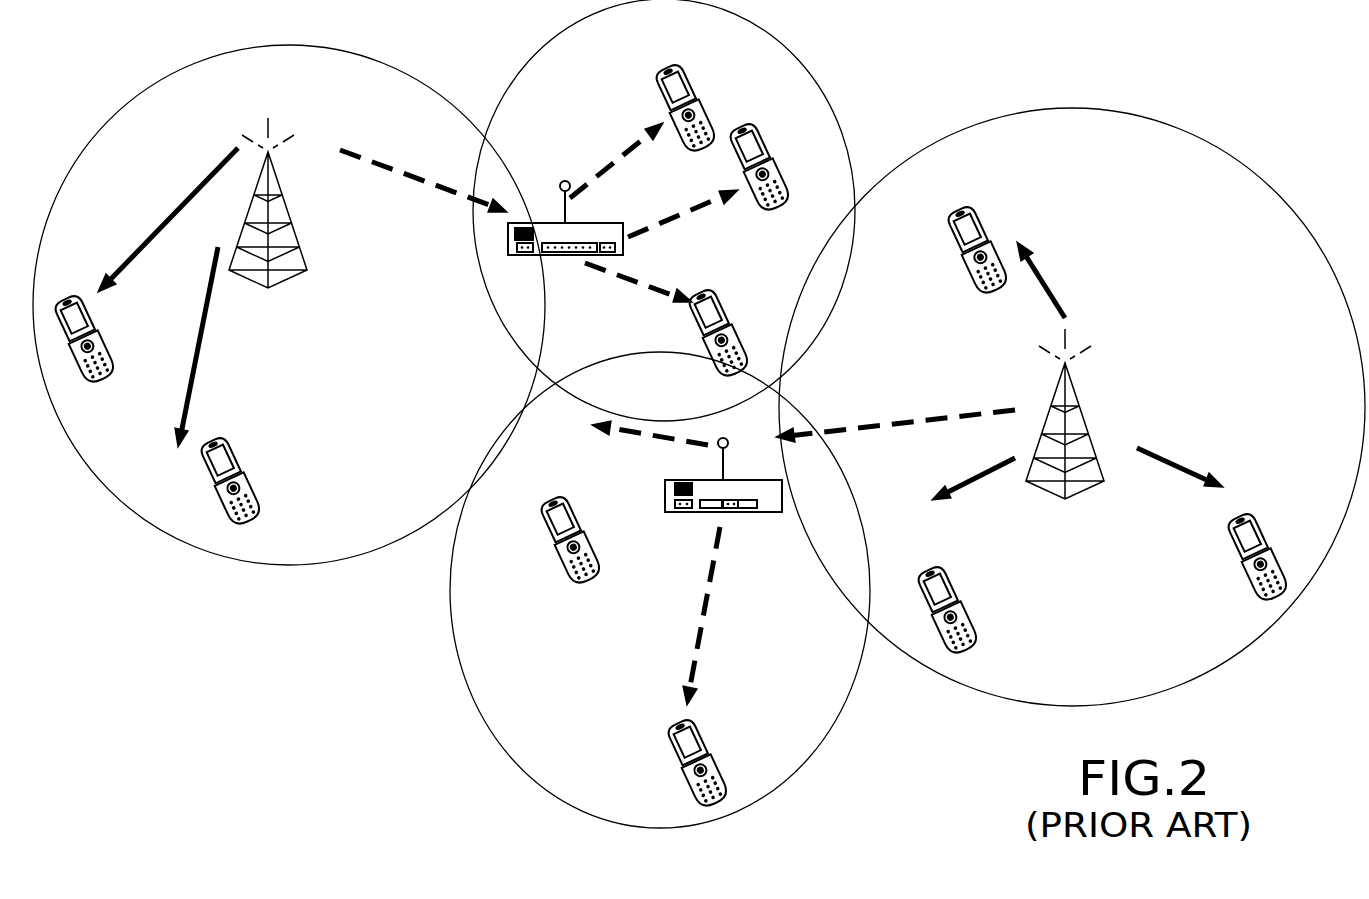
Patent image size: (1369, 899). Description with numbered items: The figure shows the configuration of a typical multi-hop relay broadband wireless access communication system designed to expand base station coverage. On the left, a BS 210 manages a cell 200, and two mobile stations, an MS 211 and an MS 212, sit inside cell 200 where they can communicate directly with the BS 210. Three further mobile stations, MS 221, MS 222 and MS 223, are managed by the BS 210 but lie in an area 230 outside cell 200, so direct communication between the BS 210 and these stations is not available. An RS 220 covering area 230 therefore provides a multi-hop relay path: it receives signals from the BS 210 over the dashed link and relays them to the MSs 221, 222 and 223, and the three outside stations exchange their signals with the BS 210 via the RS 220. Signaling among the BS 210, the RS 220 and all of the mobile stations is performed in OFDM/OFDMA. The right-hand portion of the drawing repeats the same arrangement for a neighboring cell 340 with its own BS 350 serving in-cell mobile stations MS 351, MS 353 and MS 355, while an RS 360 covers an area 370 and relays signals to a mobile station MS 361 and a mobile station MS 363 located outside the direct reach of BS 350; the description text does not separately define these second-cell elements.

The cell 200 is at (289, 305).
The base station (BS) 210 is at (286, 210).
The mobile station (MS) 211 is at (70, 298).
The mobile station (MS) 212 is at (222, 446).
The relay station (RS) 220 is at (532, 256).
The mobile station (MS) 221 is at (724, 294).
The mobile station (MS) 222 is at (674, 70).
The mobile station (MS) 223 is at (745, 126).
The area 230 is at (664, 210).
The second cell (BS coverage area) 340 is at (1072, 407).
The base station (BS) 350 is at (1090, 416).
The mobile station (MS) 351 is at (959, 205).
The mobile station (MS) 353 is at (1237, 512).
The mobile station (MS) 355 is at (932, 565).
The relay station (RS) 360 is at (675, 513).
The mobile station (MS) 361 is at (565, 495).
The mobile station (MS) 363 is at (690, 725).
The relay station coverage area 370 is at (660, 590).